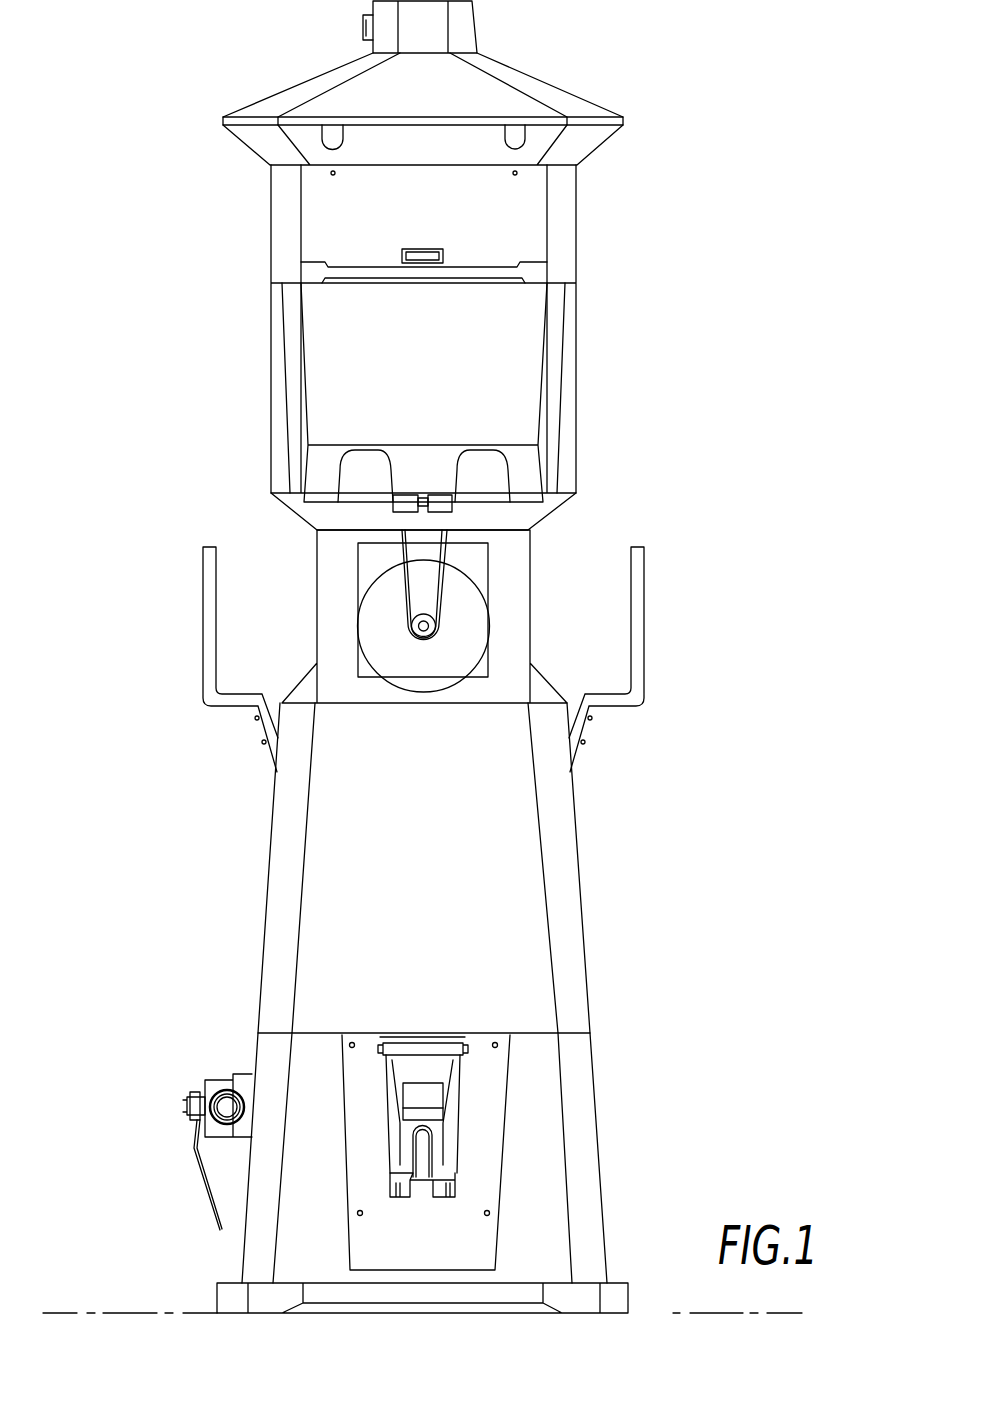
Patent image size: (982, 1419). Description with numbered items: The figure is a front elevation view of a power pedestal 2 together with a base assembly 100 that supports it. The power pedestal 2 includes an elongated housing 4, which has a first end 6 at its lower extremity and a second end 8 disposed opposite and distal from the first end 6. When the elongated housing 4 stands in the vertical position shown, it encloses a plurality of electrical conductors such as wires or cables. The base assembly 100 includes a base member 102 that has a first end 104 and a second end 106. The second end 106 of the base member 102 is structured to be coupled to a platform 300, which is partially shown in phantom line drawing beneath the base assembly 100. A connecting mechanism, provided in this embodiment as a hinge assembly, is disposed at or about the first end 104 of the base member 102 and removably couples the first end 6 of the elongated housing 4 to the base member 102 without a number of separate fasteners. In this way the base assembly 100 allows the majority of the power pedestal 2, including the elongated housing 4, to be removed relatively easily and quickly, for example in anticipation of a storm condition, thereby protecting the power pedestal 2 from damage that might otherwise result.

The power pedestal 2 is at (414, 657).
The elongated housing 4 is at (532, 806).
The first end 6 is at (402, 1116).
The second end 8 is at (241, 85).
The base assembly 100 is at (414, 1131).
The base member 102 is at (545, 1113).
The first end 104 is at (236, 1041).
The second end 106 is at (205, 1284).
The platform 300 is at (115, 1312).